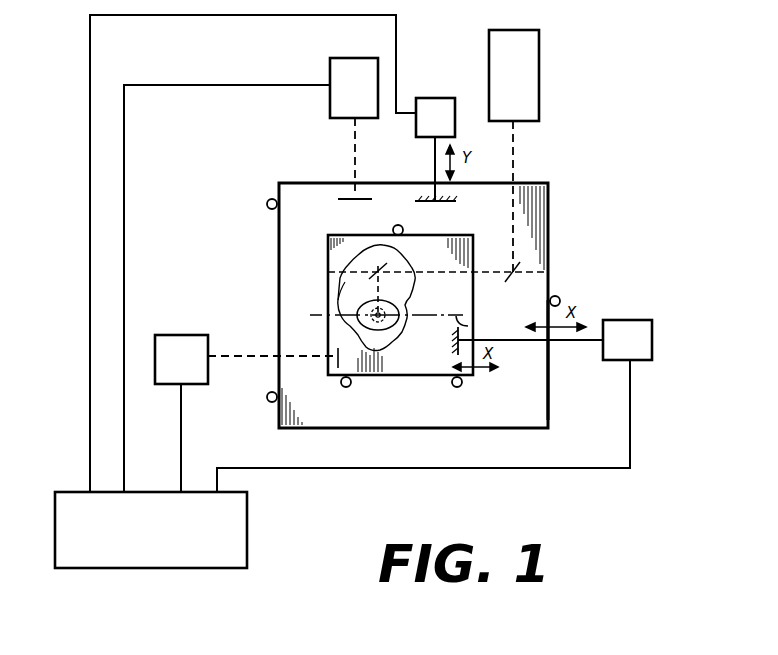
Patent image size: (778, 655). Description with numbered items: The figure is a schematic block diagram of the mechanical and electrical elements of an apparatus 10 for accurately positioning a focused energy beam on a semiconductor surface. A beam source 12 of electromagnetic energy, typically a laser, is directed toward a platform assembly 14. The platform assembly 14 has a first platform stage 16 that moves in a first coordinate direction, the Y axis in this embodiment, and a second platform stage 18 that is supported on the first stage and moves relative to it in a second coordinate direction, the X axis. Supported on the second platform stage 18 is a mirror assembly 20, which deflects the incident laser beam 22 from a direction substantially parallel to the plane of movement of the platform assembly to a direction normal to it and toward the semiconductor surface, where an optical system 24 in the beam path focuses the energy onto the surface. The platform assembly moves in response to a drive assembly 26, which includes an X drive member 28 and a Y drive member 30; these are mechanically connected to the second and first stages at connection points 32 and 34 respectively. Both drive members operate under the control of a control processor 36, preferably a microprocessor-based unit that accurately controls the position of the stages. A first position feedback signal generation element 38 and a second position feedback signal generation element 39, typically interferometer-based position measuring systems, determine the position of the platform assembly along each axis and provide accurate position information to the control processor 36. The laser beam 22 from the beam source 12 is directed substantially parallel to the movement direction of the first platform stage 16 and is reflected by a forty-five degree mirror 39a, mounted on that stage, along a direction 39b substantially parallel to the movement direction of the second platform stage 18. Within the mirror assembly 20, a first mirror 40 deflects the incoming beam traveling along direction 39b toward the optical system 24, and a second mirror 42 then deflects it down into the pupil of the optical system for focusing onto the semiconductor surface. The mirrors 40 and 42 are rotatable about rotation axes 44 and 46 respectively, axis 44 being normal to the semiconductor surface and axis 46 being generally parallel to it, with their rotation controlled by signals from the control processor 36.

The apparatus 10 is at (600, 142).
The beam source 12 is at (514, 75).
The platform assembly 14 is at (553, 432).
The first platform stage 16 is at (549, 397).
The second platform stage 18 is at (476, 296).
The mirror assembly 20 is at (362, 300).
The laser beam 22 is at (514, 161).
The optical system 24 is at (384, 320).
The drive assembly 26 is at (425, 97).
The X drive member 28 is at (434, 406).
The Y drive member 30 is at (272, 253).
The mechanical connection 32 is at (452, 349).
The mechanical connection 34 is at (456, 201).
The control processor 36 is at (248, 534).
The first position feedback signal generation element 38 is at (245, 413).
The second position feedback signal generation element 39 is at (251, 275).
The 45° mirror 39a is at (518, 275).
The direction 39b is at (416, 273).
The mirror 40 is at (380, 263).
The mirror 42 is at (357, 326).
The rotation axis 44 is at (372, 276).
The rotation axis 46 is at (466, 322).